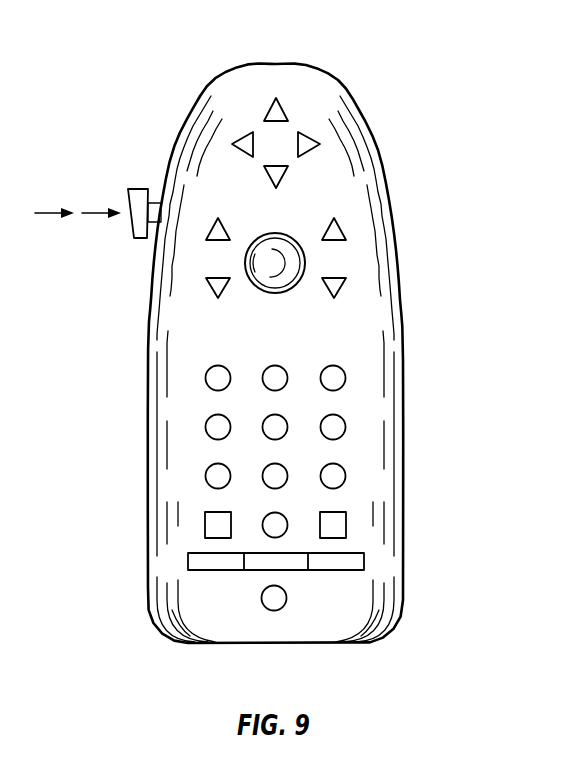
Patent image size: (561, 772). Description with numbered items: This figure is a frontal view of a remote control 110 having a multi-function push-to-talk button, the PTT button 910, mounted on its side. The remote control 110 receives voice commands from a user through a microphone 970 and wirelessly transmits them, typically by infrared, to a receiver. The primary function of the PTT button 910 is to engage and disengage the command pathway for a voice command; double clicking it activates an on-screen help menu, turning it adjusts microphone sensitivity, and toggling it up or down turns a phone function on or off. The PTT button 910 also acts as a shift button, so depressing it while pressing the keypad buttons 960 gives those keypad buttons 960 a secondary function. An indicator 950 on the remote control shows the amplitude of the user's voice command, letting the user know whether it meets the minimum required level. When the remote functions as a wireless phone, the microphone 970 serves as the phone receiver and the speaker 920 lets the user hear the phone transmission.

The remote control 110 is at (369, 36).
The PTT button 910 is at (102, 215).
The speaker 920 is at (305, 263).
The keypad buttons 960 is at (349, 452).
The indicator 950 is at (364, 562).
The microphone 970 is at (287, 598).